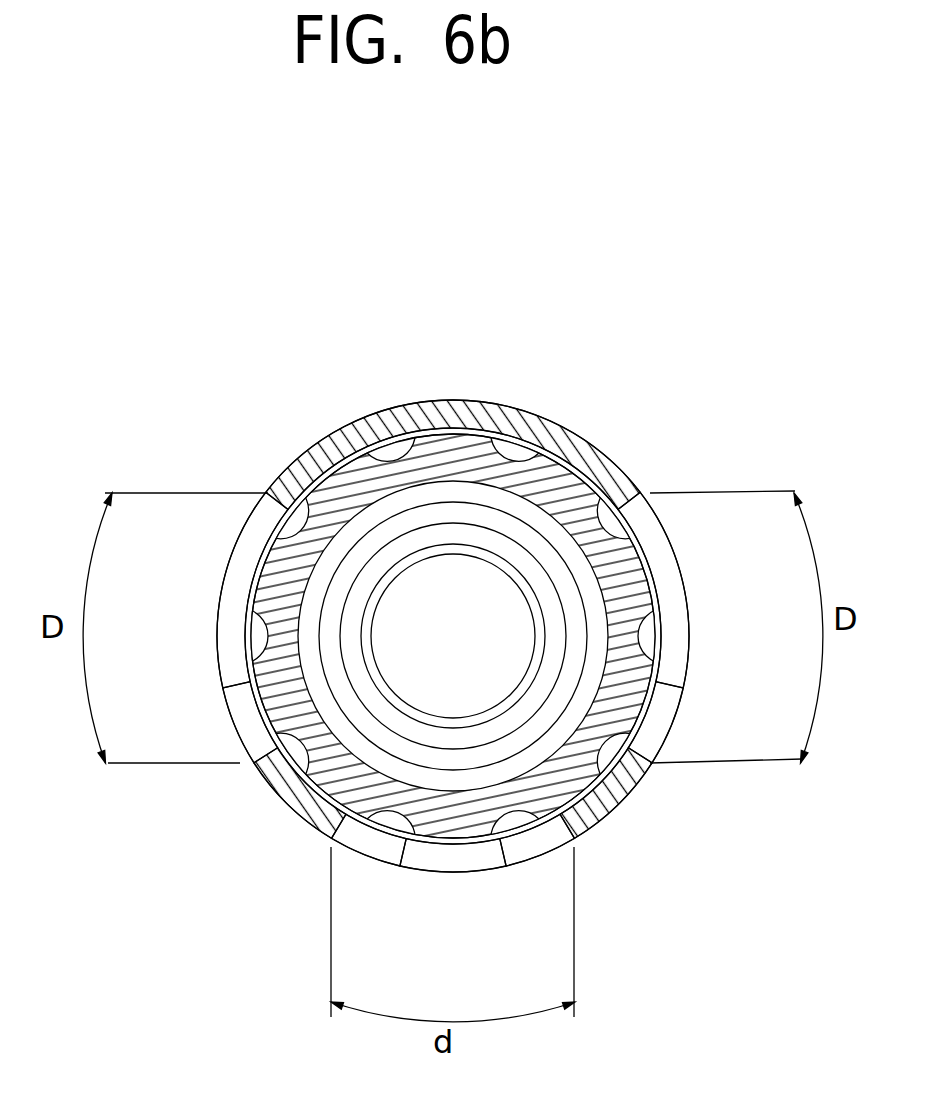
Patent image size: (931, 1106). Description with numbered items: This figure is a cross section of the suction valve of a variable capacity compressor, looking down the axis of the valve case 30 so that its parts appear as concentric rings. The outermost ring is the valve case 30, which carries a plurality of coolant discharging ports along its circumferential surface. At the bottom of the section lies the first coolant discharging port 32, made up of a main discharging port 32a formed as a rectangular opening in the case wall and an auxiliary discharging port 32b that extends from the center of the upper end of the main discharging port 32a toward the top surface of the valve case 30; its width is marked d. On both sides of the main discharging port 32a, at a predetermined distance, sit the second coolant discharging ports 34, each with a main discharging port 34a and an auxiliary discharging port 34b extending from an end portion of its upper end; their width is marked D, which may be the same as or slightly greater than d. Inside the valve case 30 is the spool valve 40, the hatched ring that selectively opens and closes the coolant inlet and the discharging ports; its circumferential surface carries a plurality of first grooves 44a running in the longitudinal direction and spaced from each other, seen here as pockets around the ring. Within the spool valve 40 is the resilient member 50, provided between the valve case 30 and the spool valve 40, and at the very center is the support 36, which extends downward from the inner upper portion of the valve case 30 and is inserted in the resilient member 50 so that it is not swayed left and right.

The valve case 30 is at (538, 428).
The first coolant discharging port 32 is at (453, 903).
The main discharging port 32a is at (385, 858).
The auxiliary discharging port 32b is at (525, 940).
The second coolant discharging port 34 is at (451, 627).
The main discharging port 34a is at (233, 663).
The auxiliary discharging port 34b is at (240, 717).
The support 36 is at (443, 550).
The spool valve 40 is at (325, 780).
The first grooves 44a is at (299, 517).
The resilient member 50 is at (518, 556).